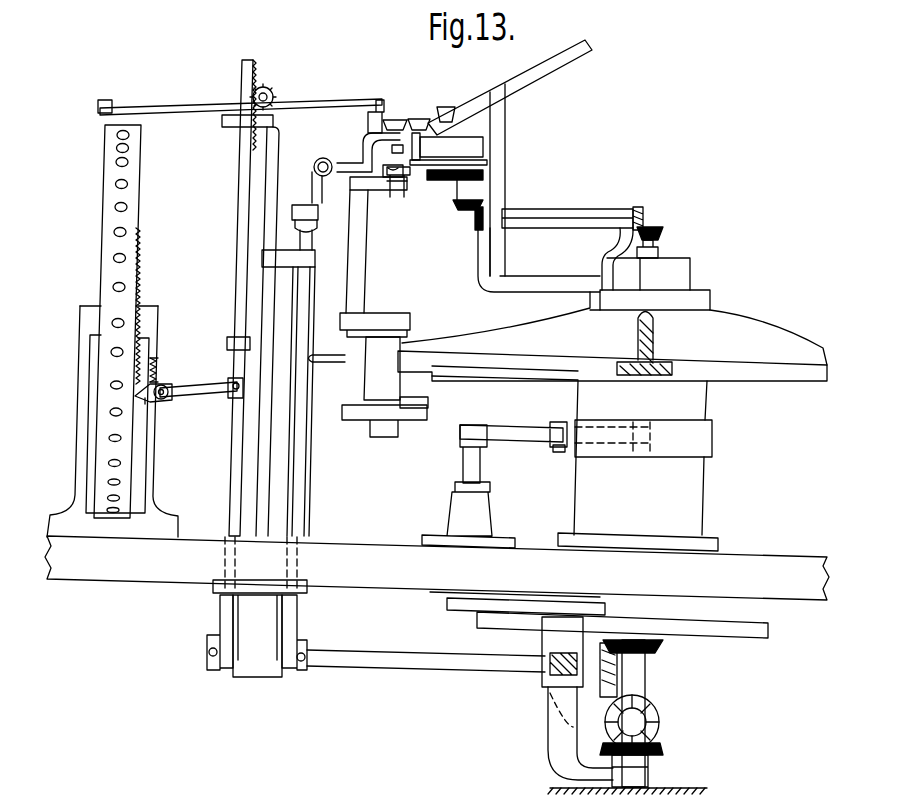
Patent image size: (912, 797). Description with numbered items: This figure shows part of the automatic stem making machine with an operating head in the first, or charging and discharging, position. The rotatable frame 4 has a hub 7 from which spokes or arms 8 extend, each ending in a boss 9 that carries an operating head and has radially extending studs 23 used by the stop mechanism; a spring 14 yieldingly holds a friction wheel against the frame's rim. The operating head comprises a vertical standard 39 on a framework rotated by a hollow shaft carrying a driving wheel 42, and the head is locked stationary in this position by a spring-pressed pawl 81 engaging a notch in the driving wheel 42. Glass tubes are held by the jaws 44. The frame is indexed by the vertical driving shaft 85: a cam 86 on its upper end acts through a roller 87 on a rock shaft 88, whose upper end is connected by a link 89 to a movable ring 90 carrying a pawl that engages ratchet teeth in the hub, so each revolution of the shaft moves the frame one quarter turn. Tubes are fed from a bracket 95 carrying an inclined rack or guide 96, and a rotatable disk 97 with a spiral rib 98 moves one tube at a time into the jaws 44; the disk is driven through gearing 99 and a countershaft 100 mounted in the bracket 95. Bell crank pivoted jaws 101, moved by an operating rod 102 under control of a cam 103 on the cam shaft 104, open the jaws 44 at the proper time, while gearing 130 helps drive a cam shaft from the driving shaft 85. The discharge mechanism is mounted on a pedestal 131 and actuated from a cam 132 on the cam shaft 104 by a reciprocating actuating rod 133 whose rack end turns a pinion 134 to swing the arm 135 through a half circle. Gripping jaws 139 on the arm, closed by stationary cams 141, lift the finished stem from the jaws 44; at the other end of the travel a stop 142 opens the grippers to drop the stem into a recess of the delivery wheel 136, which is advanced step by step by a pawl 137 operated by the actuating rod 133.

The rotatable frame 4 is at (708, 400).
The hub 7 is at (705, 323).
The spokes or arms 8 is at (490, 340).
The boss 9 is at (368, 382).
The spring 14 is at (566, 419).
The radially extending studs 23 is at (325, 365).
The vertical standard 39 is at (353, 242).
The driving wheel 42 is at (342, 414).
The jaws 44 is at (392, 151).
The spring-pressed pawl 81 is at (428, 402).
The vertical driving shaft 85 is at (645, 688).
The cam 86 is at (760, 620).
The roller 87 is at (590, 628).
The rock shaft 88 is at (481, 470).
The link 89 is at (560, 452).
The movable ring 90 is at (712, 443).
The bracket 95 is at (500, 262).
The inclined rack or guide 96 is at (543, 80).
The rotatable disk 97 is at (408, 184).
The spiral rib 98 is at (465, 143).
The gearing 99 is at (646, 222).
The countershaft 100 is at (548, 208).
The bell crank pivoted jaws 101 is at (313, 166).
The operating rod 102 is at (306, 325).
The cam 103 is at (296, 630).
The cam shaft 104 is at (365, 648).
The gearing 130 is at (552, 790).
The pedestal 131 is at (276, 150).
The cam 132 is at (222, 612).
The reciprocating actuating rod 133 is at (241, 67).
The pinion 134 is at (273, 90).
The arm 135 is at (340, 102).
The delivery wheel 136 is at (141, 180).
The pawl 137 is at (136, 398).
The gripping jaws 139 is at (366, 136).
The stationary cams 141 is at (380, 118).
The stop 142 is at (112, 102).